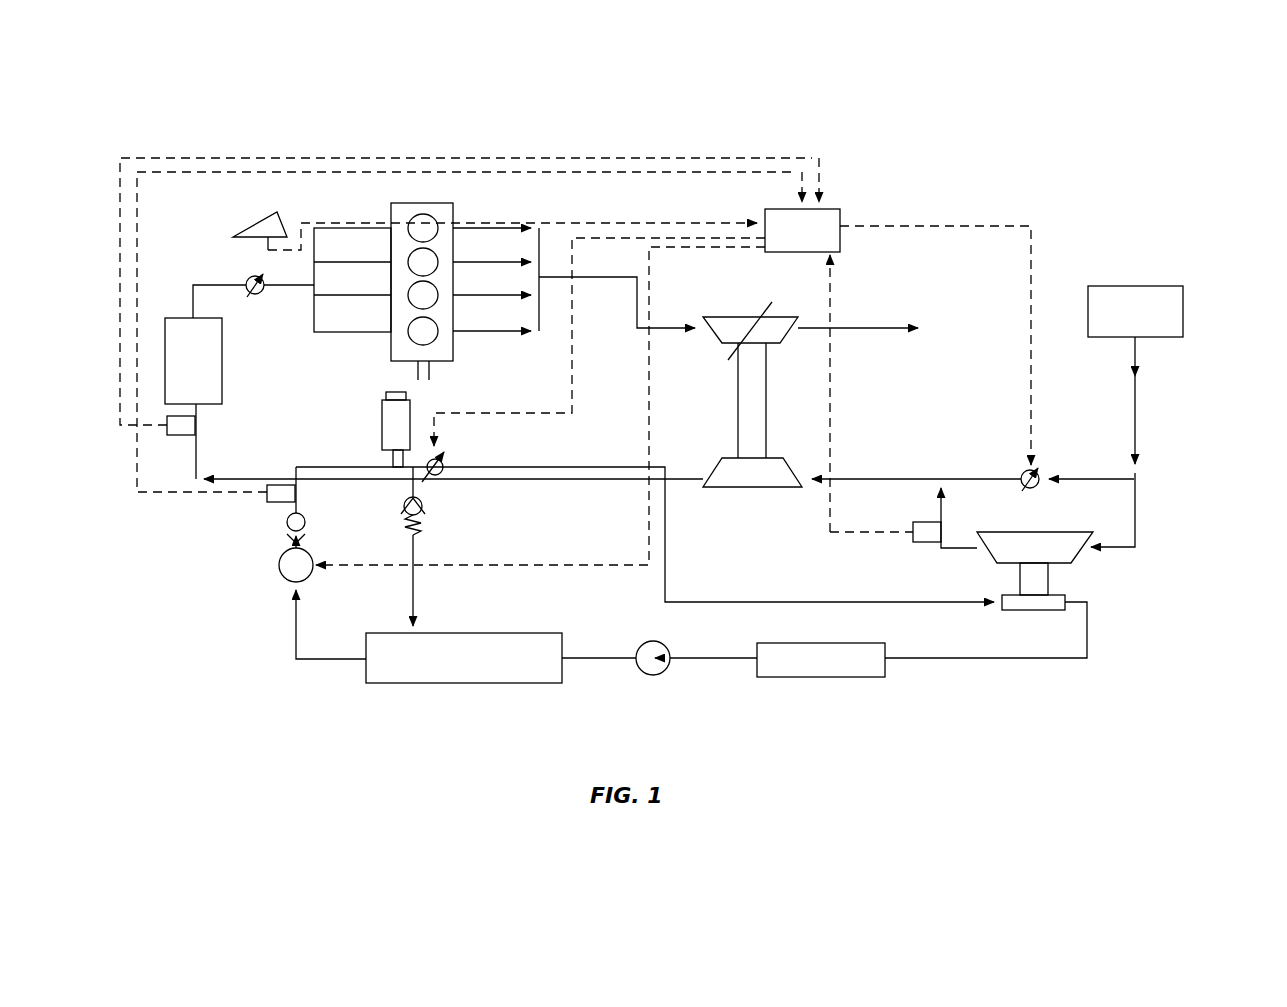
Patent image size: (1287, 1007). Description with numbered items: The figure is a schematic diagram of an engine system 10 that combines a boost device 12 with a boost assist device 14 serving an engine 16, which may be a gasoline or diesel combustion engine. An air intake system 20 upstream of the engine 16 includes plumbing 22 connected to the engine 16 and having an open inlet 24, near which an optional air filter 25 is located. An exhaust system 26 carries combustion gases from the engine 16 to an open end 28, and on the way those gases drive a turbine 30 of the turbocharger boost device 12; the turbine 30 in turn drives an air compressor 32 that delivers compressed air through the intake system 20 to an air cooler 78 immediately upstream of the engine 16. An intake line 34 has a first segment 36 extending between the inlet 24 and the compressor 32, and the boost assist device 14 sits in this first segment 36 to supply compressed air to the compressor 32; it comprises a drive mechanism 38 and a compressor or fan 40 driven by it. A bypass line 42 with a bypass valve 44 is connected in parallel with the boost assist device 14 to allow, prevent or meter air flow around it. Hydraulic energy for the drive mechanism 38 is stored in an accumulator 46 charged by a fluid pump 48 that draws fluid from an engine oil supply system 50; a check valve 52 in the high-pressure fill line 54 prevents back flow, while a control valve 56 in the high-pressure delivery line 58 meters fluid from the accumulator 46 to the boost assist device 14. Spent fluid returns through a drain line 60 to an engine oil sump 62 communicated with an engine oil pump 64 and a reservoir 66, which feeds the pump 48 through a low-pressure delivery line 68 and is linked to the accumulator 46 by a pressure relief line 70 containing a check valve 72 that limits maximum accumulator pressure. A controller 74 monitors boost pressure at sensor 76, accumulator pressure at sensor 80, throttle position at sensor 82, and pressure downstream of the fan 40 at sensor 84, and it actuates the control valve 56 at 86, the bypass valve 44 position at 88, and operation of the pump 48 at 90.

The engine system 10 is at (999, 126).
The boost device 12 is at (724, 400).
The boost assist device 14 is at (1085, 565).
The engine 16 is at (472, 203).
The air intake system 20 is at (312, 263).
The plumbing 22 is at (204, 455).
The inlet 24 is at (1120, 282).
The air filter 25 is at (1165, 312).
The exhaust system 26 is at (512, 340).
The open end 28 is at (928, 328).
The turbine 30 is at (775, 318).
The air compressor 32 is at (795, 475).
The intake line 34 is at (1142, 384).
The first segment 36 is at (1135, 443).
The drive mechanism 38 is at (1045, 610).
The compressor or fan 40 is at (1030, 535).
The bypass line 42 is at (1048, 466).
The bypass valve 44 is at (1015, 474).
The accumulator 46 is at (382, 405).
The fluid pump 48 is at (279, 565).
The engine oil supply system 50 is at (596, 678).
The check valve 52 is at (310, 518).
The high-pressure fill line 54 is at (296, 467).
The control valve 56 is at (443, 462).
The high-pressure delivery line 58 is at (540, 465).
The drain line 60 is at (980, 660).
The engine oil sump 62 is at (812, 678).
The engine oil pump 64 is at (655, 676).
The reservoir 66 is at (430, 690).
The low-pressure delivery line 68 is at (318, 670).
The pressure relief line 70 is at (414, 620).
The check valve 72 is at (430, 515).
The controller 74 is at (840, 216).
The sensor 76 is at (137, 490).
The air cooler 78 is at (222, 366).
The sensor 80 is at (267, 502).
The sensor 82 is at (282, 222).
The sensor 84 is at (920, 542).
The accumulator control valve actuation 86 is at (575, 390).
The bypass valve position control 88 is at (1031, 240).
The pump actuation control 90 is at (520, 570).